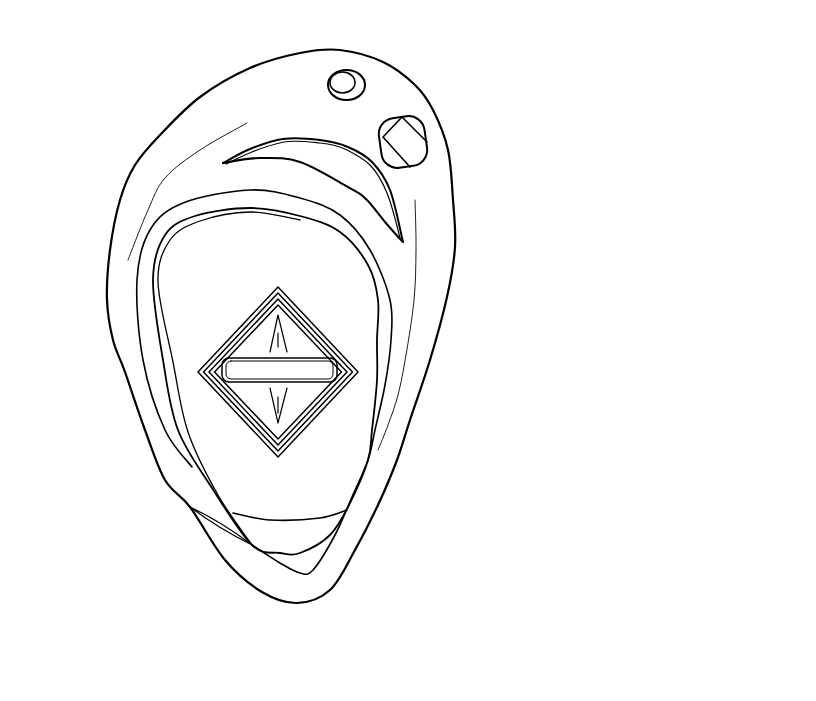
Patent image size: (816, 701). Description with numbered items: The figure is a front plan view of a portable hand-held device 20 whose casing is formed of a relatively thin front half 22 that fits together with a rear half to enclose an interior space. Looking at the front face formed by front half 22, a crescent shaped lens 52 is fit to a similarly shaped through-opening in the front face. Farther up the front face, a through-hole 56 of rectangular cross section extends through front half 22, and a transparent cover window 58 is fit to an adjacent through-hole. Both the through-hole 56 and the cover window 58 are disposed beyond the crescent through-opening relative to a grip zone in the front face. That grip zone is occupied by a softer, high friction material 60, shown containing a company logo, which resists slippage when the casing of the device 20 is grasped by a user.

The portable hand-held device 20 is at (487, 340).
The front half 22 is at (400, 402).
The crescent shaped lens 52 is at (297, 155).
The through-hole 56 is at (410, 145).
The transparent cover window 58 is at (360, 82).
The high friction material 60 is at (190, 318).